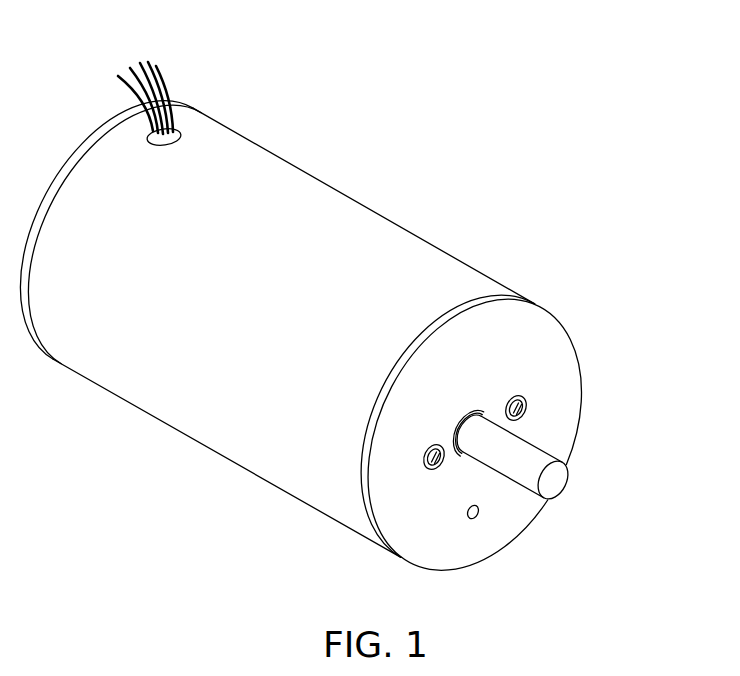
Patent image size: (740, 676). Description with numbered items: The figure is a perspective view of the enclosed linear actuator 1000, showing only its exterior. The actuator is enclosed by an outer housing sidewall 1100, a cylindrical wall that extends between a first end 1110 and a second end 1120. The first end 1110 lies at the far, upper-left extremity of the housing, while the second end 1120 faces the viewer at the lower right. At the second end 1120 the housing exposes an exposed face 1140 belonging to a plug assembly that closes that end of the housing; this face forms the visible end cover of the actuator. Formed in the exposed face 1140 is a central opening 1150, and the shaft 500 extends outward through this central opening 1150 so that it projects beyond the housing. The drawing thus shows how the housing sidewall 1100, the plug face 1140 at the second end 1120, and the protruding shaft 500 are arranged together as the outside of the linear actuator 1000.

The enclosed linear actuator 1000 is at (423, 173).
The outer housing sidewall 1100 is at (230, 143).
The first end 1110 is at (178, 100).
The second end 1120 is at (502, 296).
The exposed face 1140 is at (535, 338).
The central opening 1150 is at (484, 412).
The shaft 500 is at (523, 462).